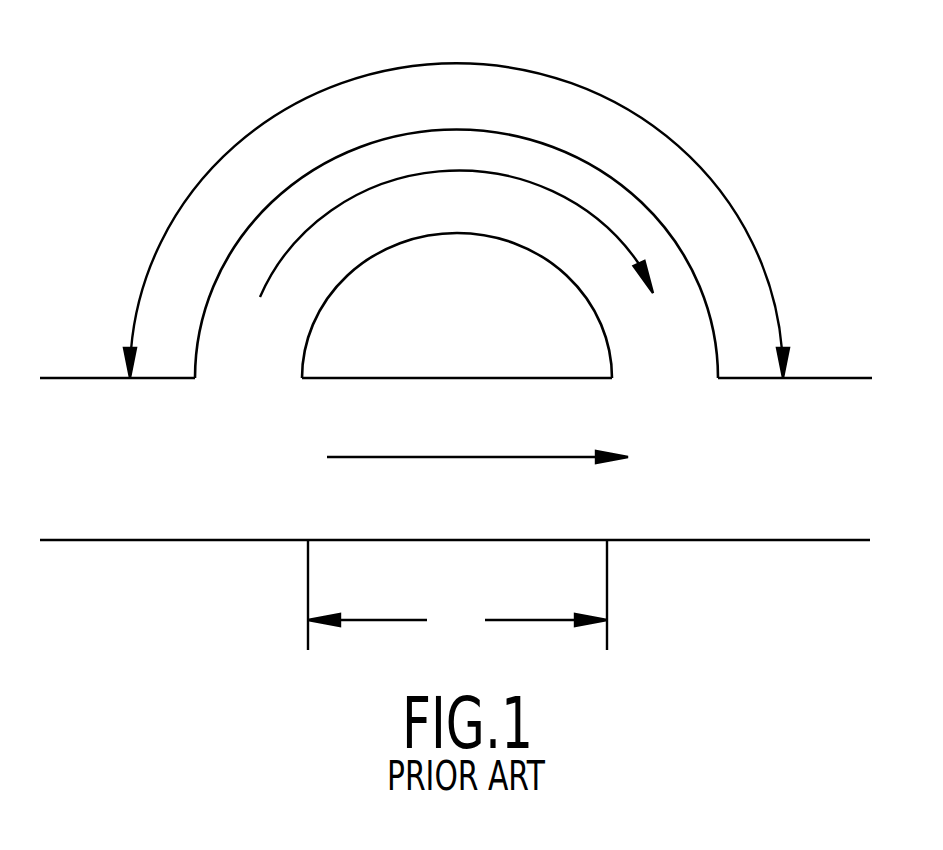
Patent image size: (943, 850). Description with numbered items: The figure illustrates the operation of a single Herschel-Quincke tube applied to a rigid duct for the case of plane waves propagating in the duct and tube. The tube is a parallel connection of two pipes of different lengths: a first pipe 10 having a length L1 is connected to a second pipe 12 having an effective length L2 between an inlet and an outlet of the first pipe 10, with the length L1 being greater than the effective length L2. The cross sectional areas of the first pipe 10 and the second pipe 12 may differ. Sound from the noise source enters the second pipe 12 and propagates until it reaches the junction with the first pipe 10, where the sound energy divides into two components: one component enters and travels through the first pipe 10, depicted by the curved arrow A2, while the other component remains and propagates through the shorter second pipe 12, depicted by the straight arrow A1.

The first pipe 10 is at (685, 260).
The second pipe 12 is at (749, 520).
The length of the first pipe L1 is at (456, 191).
The effective length of the second pipe L2 is at (457, 595).
The straight arrow A1 is at (451, 458).
The curved arrow A2 is at (443, 259).